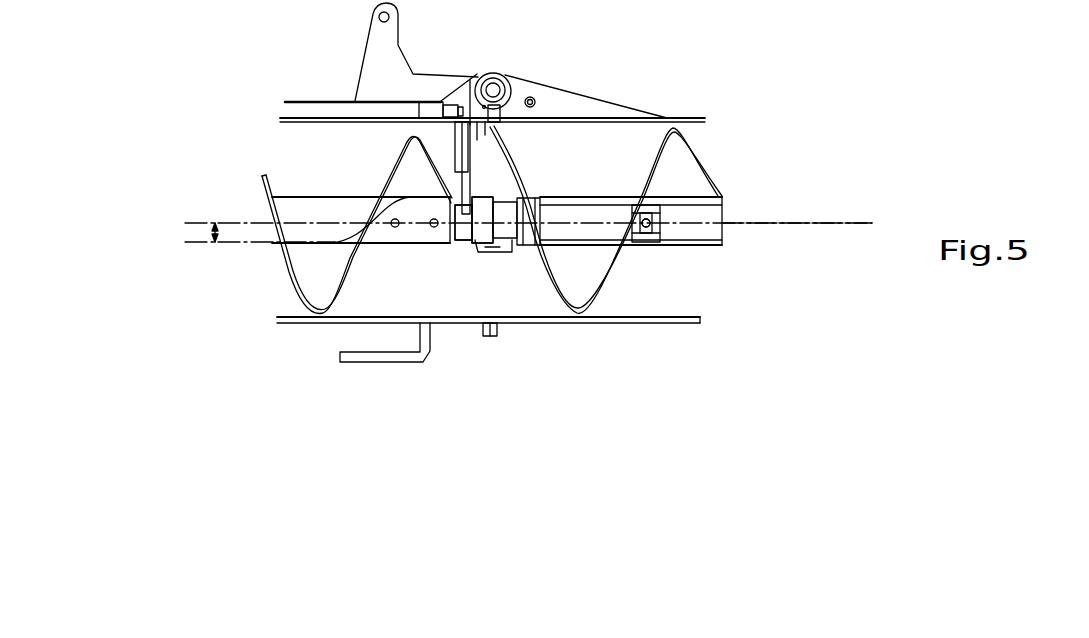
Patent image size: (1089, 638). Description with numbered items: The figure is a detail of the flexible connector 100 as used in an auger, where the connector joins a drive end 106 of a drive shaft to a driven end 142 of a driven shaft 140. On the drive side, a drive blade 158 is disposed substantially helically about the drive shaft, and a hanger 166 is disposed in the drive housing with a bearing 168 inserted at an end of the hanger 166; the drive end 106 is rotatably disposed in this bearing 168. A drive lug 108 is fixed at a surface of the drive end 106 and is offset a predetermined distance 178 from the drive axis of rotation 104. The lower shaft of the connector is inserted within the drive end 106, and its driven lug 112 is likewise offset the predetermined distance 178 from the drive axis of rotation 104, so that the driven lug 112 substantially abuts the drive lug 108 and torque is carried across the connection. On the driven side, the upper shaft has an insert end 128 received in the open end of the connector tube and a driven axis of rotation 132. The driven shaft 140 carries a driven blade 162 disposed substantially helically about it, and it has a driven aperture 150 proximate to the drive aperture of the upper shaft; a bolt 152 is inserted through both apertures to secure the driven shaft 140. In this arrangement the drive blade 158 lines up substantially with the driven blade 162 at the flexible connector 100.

The flexible connector 100 is at (602, 192).
The drive axis of rotation 104 is at (517, 218).
The drive end 106 is at (437, 245).
The drive lug 108 is at (489, 193).
The driven lug 112 is at (505, 252).
The insert end 128 is at (649, 242).
The driven axis of rotation 132 is at (867, 212).
The driven shaft 140 is at (702, 194).
The driven end 142 is at (719, 194).
The driven aperture 150 is at (721, 261).
The bolt 152 is at (654, 230).
The drive blade 158 is at (259, 177).
The driven blade 162 is at (705, 157).
The hanger 166 is at (470, 80).
The bearing 168 is at (458, 241).
The predetermined distance 178 is at (214, 234).